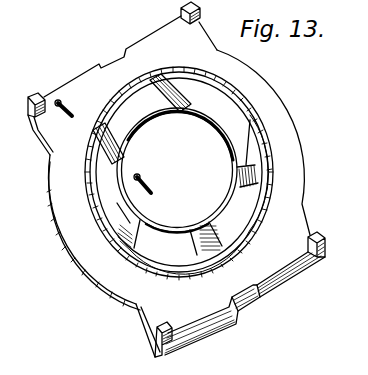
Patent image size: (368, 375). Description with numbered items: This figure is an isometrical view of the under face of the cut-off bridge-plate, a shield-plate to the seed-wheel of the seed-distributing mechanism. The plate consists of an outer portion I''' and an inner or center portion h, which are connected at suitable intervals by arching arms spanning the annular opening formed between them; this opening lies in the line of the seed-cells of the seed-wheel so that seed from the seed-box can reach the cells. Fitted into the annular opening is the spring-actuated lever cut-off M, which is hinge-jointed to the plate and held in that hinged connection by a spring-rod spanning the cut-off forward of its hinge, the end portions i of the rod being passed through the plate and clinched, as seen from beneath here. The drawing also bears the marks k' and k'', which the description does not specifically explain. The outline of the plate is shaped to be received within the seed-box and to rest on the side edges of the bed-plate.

The outer portion of shield-plate I''' is at (176, 179).
The end portions of spring-rod i is at (103, 142).
The spring-actuated lever cut-off M is at (179, 173).
The cage rib k'' is at (141, 123).
The cage pocket k' is at (185, 187).
The inner or center portion of shield-plate h is at (177, 170).